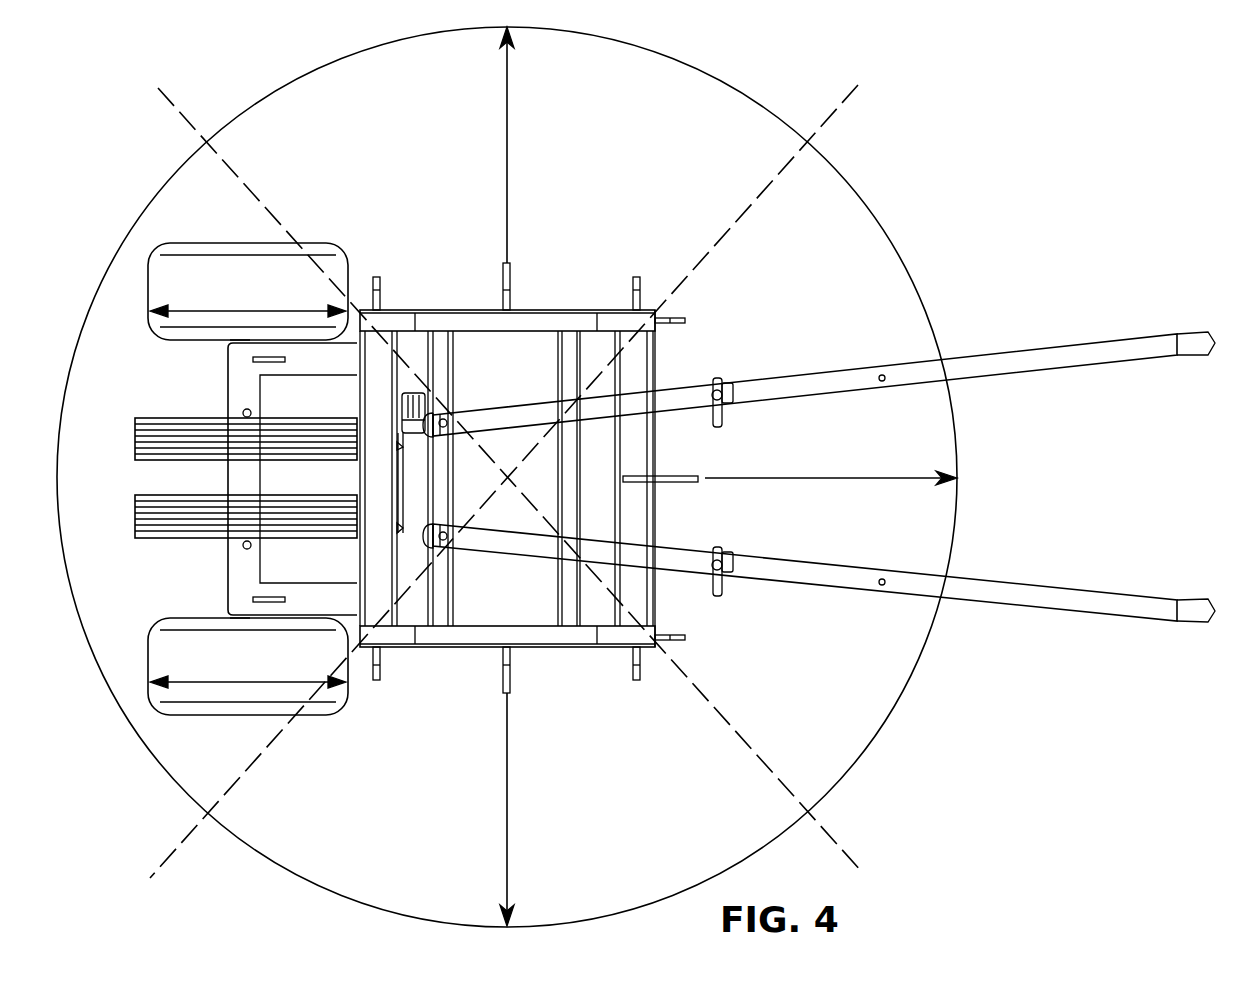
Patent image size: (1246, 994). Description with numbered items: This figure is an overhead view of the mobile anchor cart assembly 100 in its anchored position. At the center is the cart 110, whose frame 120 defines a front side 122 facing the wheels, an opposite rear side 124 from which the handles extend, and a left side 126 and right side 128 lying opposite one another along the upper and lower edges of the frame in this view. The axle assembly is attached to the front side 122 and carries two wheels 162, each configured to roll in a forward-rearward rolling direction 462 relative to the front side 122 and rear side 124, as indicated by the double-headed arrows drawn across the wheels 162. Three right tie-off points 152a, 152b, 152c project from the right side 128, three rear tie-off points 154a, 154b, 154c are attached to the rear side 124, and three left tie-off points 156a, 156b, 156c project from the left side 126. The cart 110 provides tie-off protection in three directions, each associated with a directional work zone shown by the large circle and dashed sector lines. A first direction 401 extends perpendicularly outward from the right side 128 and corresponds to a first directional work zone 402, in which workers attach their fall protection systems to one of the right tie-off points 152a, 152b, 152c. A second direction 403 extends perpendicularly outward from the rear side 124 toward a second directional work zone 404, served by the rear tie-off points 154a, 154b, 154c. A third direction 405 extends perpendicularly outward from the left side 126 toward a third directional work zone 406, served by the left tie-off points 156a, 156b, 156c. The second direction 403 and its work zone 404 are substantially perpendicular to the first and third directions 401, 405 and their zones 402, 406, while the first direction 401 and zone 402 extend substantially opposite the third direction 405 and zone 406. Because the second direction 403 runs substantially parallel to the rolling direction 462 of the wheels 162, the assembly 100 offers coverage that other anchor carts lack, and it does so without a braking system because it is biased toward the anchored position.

The mobile anchor cart assembly 100 is at (875, 92).
The cart 110 is at (243, 405).
The frame 120 is at (567, 469).
The front side 122 is at (352, 388).
The rear side 124 is at (657, 358).
The left side 126 is at (455, 650).
The right side 128 is at (460, 309).
The right tie-off point 152a is at (640, 278).
The right tie-off point 152b is at (511, 278).
The right tie-off point 152c is at (381, 290).
The rear tie-off point 154a is at (687, 640).
The rear tie-off point 154b is at (684, 484).
The rear tie-off point 154c is at (685, 320).
The left tie-off point 156a is at (378, 682).
The left tie-off point 156b is at (512, 675).
The left tie-off point 156c is at (642, 682).
The wheel 162 is at (195, 243).
The first direction 401 is at (508, 112).
The first directional work zone 402 is at (313, 72).
The second direction 403 is at (920, 478).
The second directional work zone 404 is at (935, 645).
The third direction 405 is at (508, 818).
The third directional work zone 406 is at (290, 862).
The rolling direction 462 is at (235, 311).